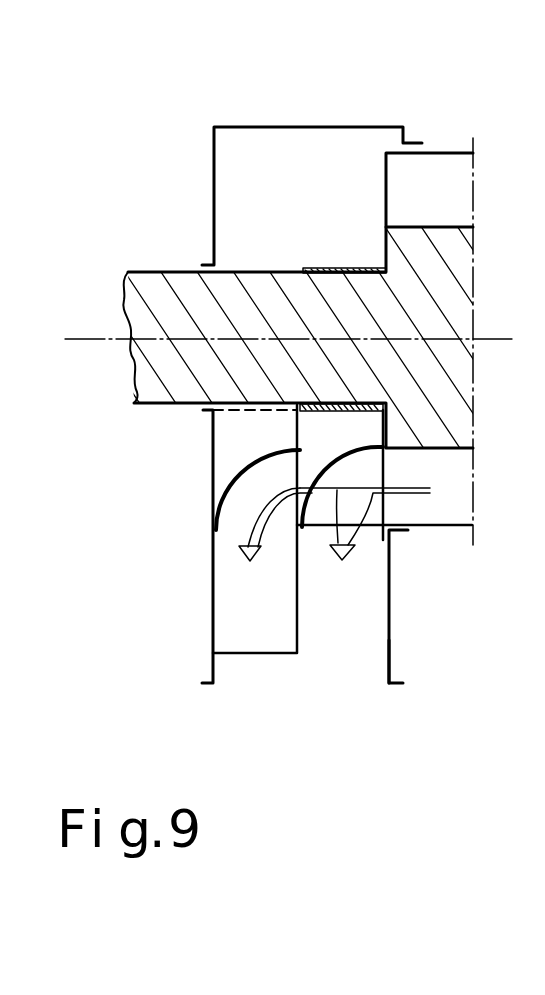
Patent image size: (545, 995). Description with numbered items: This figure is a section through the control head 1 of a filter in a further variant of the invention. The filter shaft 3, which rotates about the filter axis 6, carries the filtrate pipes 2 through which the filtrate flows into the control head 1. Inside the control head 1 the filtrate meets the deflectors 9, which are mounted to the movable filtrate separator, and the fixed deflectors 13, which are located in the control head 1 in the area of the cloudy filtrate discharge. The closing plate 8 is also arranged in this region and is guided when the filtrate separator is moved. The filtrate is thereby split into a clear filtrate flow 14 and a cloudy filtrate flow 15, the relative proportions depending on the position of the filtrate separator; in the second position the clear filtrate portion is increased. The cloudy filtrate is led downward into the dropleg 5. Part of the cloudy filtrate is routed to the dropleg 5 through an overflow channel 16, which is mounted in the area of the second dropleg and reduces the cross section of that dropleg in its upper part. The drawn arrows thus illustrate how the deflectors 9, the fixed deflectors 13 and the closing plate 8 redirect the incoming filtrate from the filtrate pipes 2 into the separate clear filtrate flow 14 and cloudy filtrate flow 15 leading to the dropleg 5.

The control head 1 is at (300, 127).
The filtrate pipes 2 is at (462, 178).
The filter shaft 3 is at (457, 300).
The dropleg 5 is at (373, 668).
The filter axis 6 is at (78, 338).
The closing plate 8 is at (367, 530).
The deflectors 9 is at (353, 454).
The fixed deflectors 13 is at (232, 468).
The clear filtrate flow 14 is at (357, 540).
The cloudy filtrate flow 15 is at (250, 518).
The overflow channel 16 is at (230, 642).